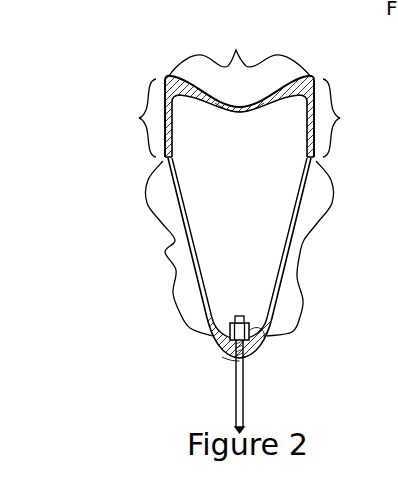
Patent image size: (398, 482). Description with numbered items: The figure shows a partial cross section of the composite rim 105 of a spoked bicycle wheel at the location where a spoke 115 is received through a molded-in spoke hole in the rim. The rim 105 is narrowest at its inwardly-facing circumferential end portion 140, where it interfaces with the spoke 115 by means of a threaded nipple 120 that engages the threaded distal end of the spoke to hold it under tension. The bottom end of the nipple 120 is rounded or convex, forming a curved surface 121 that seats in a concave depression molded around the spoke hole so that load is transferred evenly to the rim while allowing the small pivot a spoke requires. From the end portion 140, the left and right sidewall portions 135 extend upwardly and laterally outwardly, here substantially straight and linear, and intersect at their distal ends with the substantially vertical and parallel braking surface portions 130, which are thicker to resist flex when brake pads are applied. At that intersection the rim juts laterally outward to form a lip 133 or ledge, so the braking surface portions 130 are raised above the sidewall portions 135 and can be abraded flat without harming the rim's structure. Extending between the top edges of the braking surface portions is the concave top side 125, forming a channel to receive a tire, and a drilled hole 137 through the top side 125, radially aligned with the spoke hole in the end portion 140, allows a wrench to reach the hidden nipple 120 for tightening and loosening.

The composite rim 105 is at (134, 63).
The spoke 115 is at (244, 392).
The threaded nipple 120 is at (262, 333).
The curved surface 121 is at (232, 339).
The top side 125 is at (236, 50).
The braking surface portion 130 is at (139, 118).
The lip 133 is at (158, 165).
The sidewall portion 135 is at (165, 252).
The drilled hole 137 is at (240, 114).
The inwardly-facing circumferential end portion 140 is at (226, 360).